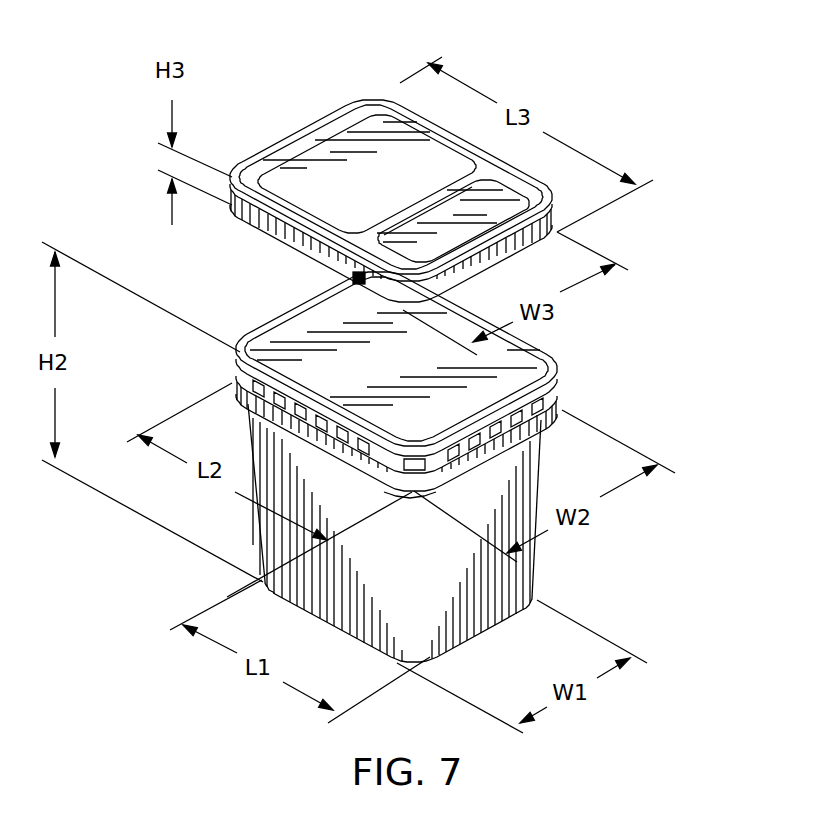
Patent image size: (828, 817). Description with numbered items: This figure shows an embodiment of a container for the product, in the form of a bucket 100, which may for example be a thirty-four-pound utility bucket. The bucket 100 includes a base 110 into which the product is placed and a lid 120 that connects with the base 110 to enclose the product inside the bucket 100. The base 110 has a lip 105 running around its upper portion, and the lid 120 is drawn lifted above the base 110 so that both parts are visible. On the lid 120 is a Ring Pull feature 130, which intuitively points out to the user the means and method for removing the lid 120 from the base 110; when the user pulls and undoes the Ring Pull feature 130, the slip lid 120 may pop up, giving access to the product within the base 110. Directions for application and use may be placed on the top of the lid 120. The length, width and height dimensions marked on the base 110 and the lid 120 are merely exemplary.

The bucket 100 is at (632, 126).
The lip 105 is at (565, 367).
The base 110 is at (283, 540).
The lid 120 is at (281, 129).
The Ring Pull feature 130 is at (353, 278).